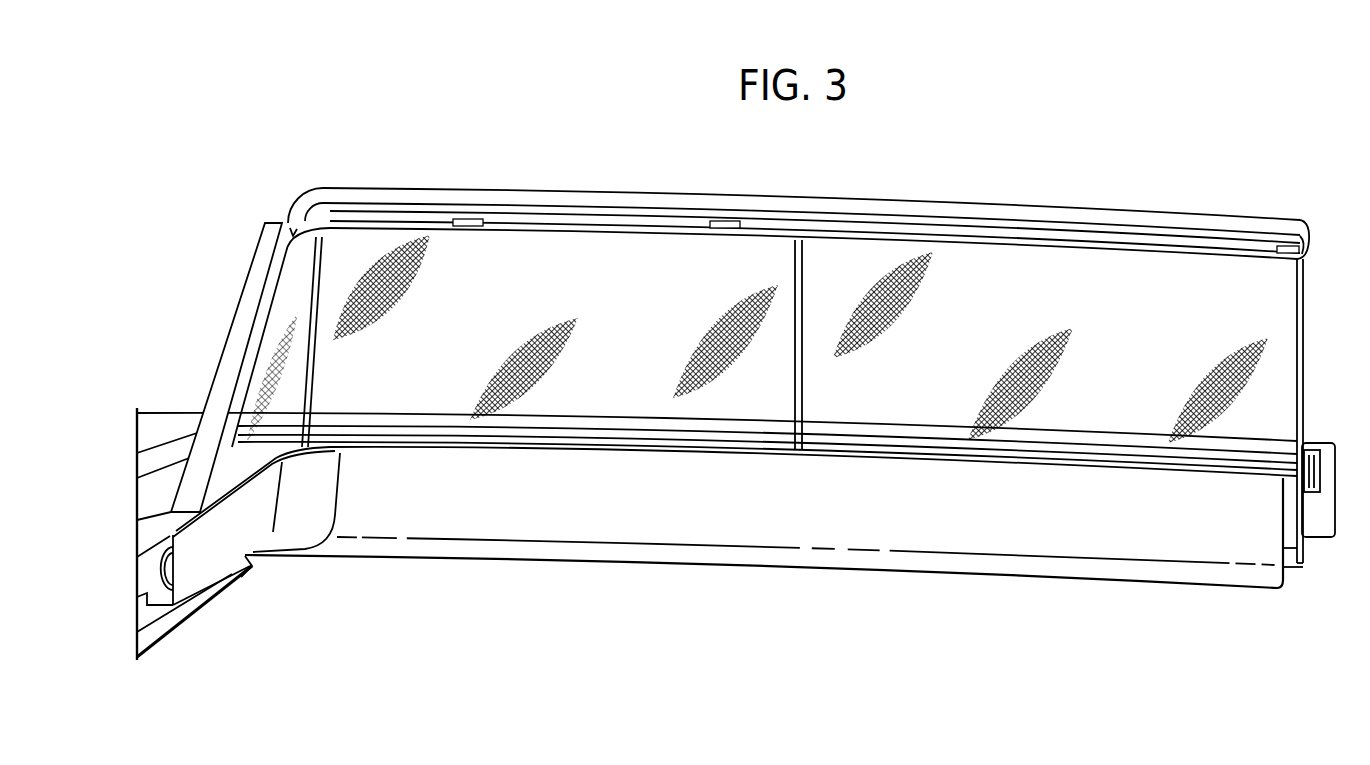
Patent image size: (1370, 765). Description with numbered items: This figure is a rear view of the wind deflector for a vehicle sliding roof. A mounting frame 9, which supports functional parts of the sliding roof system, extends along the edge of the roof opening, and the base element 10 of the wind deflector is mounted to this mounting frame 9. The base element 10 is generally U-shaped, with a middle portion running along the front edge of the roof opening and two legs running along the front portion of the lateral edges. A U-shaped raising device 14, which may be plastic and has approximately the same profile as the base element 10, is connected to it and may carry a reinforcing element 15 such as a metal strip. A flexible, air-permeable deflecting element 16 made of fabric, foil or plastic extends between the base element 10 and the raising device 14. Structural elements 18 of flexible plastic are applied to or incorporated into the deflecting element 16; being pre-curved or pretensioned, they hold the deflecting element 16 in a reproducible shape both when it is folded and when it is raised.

The mounting frame 9 is at (1157, 549).
The base element 10 is at (1300, 563).
The raising device 14 is at (1188, 214).
The reinforcing element 15 is at (1307, 243).
The deflecting element 16 is at (1281, 312).
The structural elements 18 is at (793, 244).